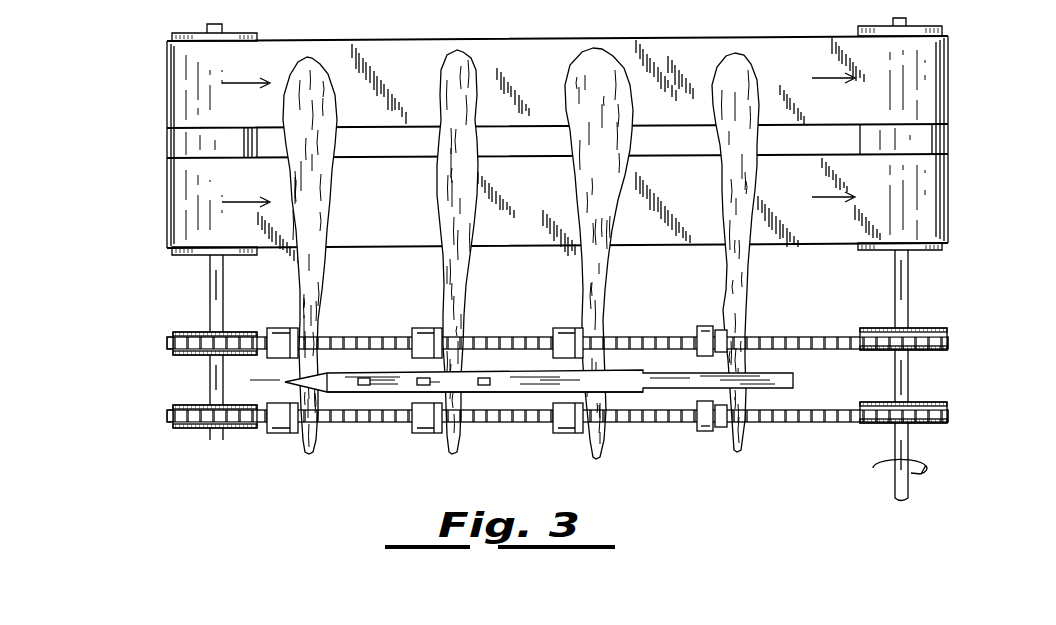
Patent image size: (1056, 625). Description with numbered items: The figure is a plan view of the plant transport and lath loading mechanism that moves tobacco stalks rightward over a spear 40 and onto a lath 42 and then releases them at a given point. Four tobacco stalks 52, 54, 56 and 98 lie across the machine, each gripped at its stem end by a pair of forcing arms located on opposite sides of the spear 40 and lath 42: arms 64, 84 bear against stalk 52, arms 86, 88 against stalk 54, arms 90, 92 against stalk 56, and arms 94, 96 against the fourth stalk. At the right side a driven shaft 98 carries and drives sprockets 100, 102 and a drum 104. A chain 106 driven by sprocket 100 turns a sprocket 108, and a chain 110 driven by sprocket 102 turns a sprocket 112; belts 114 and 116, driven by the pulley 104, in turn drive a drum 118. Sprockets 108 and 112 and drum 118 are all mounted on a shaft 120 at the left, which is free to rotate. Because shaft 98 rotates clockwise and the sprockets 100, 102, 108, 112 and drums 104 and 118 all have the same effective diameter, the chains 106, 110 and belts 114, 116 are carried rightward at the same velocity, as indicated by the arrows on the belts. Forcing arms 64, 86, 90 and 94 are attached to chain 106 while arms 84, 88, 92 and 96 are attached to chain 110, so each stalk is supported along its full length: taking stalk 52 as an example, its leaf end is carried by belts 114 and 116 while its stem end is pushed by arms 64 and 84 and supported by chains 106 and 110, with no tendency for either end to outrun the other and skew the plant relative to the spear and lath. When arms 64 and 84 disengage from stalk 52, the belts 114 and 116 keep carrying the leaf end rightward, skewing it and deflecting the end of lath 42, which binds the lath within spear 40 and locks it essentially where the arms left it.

The spear 40 is at (522, 395).
The lath 42 is at (796, 374).
The tobacco stalk 52 is at (746, 262).
The tobacco stalk 54 is at (602, 263).
The tobacco stalk 56 is at (472, 263).
The forcing arm 64 is at (708, 433).
The forcing arm 84 is at (706, 327).
The forcing arm 86 is at (570, 436).
The forcing arm 88 is at (566, 329).
The forcing arm 90 is at (425, 436).
The forcing arm 92 is at (424, 329).
The forcing arm 94 is at (280, 437).
The forcing arm 96 is at (281, 329).
The driven shaft 98 is at (324, 266).
The sprocket 100 is at (940, 403).
The sprocket 102 is at (940, 329).
The drum 104 is at (947, 132).
The chain 106 is at (780, 427).
The sprocket 108 is at (180, 430).
The chain 110 is at (796, 336).
The sprocket 112 is at (178, 356).
The belt 114 is at (950, 193).
The belt 116 is at (816, 36).
The drum 118 is at (248, 33).
The shaft 120 is at (209, 293).